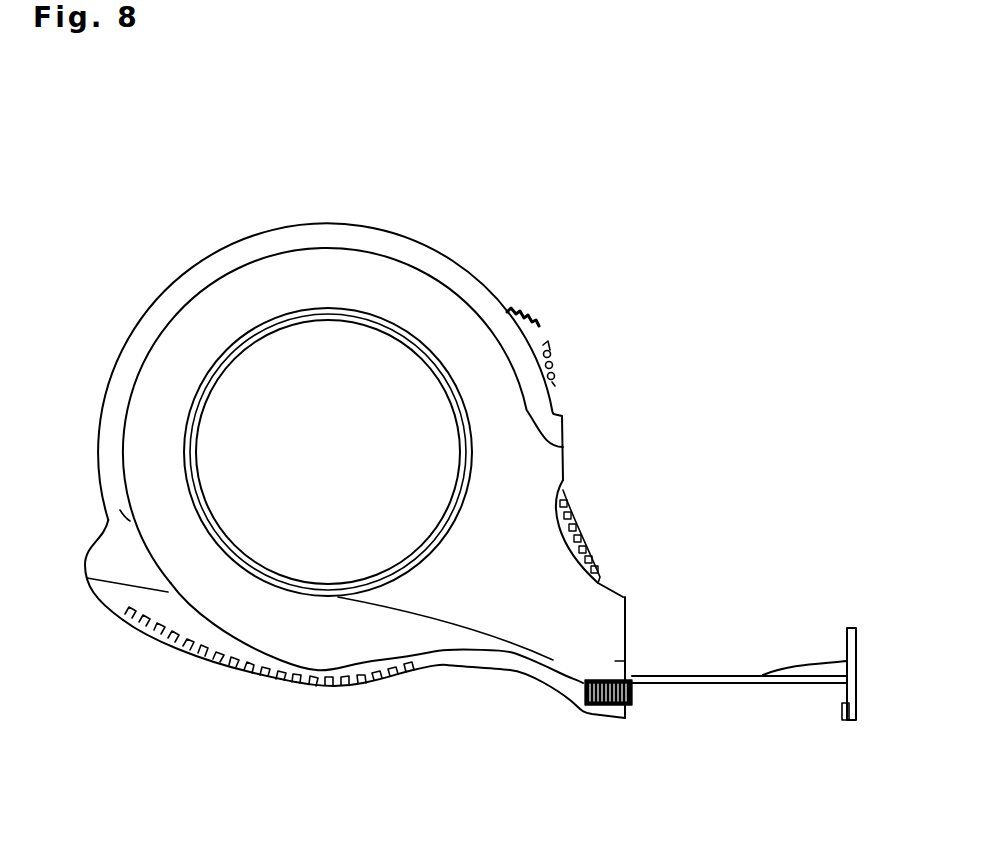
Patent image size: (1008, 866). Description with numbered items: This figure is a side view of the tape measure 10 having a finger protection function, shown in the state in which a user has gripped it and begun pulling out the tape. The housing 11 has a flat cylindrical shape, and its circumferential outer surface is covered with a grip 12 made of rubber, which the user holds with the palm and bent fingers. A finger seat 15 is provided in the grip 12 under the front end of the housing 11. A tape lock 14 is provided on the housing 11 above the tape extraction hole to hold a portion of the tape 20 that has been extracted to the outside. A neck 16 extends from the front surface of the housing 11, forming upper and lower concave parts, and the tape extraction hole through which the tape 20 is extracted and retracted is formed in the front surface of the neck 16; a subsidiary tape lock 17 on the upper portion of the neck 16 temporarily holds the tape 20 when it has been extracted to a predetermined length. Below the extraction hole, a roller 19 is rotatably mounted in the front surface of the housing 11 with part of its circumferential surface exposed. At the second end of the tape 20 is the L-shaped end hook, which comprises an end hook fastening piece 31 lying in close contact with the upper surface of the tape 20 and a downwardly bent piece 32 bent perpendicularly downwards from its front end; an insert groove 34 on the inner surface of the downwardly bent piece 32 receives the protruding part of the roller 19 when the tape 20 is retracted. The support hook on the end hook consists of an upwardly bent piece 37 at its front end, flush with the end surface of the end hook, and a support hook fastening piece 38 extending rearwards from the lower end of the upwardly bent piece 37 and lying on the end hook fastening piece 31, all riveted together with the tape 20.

The tape measure 10 is at (131, 194).
The housing 11 is at (188, 338).
The grip 12 is at (267, 240).
The tape lock 14 is at (540, 352).
The finger seat 15 is at (494, 670).
The neck 16 is at (517, 593).
The subsidiary tape lock 17 is at (565, 487).
The roller 19 is at (635, 693).
The tape 20 is at (715, 676).
The end hook fastening piece 31 is at (781, 684).
The downwardly bent piece 32 is at (843, 718).
The insert groove 34 is at (841, 708).
The upwardly bent piece 37 is at (847, 645).
The support hook fastening piece 38 is at (771, 674).